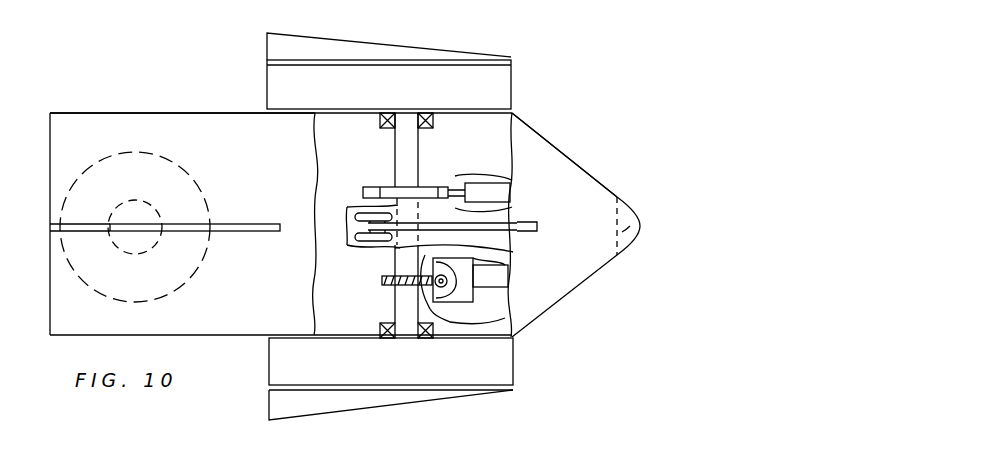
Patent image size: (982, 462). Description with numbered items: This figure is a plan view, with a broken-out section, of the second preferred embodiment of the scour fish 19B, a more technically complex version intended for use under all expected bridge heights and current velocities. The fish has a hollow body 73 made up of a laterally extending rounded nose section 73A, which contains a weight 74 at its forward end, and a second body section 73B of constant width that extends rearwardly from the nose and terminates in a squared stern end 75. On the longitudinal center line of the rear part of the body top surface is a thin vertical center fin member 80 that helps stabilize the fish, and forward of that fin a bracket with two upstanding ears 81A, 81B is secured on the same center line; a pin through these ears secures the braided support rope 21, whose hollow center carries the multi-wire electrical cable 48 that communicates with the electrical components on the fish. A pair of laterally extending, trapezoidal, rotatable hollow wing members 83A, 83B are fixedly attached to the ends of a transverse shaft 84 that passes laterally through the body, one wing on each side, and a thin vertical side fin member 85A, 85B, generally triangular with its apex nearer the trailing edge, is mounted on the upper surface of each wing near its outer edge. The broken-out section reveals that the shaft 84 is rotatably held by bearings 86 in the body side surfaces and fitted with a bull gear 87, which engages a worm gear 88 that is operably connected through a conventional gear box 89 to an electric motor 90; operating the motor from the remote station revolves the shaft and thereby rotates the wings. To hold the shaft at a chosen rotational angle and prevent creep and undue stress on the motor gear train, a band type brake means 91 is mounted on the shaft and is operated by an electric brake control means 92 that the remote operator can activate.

The hollow body 73 is at (262, 195).
The nose section 73A is at (590, 282).
The second body section 73B is at (226, 113).
The weight 74 is at (640, 226).
The rear wall 75 is at (50, 168).
The center fin member 80 is at (225, 231).
The upstanding ear 81A is at (359, 253).
The upstanding ear 81B is at (366, 212).
The wing member 83A is at (513, 372).
The wing member 83B is at (505, 92).
The transverse shaft 84 is at (408, 142).
The side fin member 85A is at (385, 392).
The side fin member 85B is at (355, 60).
The bearings 86 is at (440, 125).
The bull gear 87 is at (380, 290).
The worm gear 88 is at (442, 302).
The gear box 89 is at (406, 260).
The electric motor 90 is at (505, 288).
The band type brake means 91 is at (430, 186).
The electric brake control means 92 is at (476, 183).
The multi-wire electrical cable 48 is at (528, 227).
The braided support rope 21 is at (507, 263).
The scour fish 19B is at (596, 163).